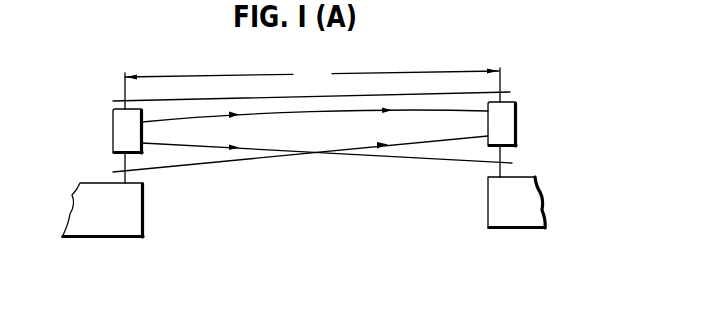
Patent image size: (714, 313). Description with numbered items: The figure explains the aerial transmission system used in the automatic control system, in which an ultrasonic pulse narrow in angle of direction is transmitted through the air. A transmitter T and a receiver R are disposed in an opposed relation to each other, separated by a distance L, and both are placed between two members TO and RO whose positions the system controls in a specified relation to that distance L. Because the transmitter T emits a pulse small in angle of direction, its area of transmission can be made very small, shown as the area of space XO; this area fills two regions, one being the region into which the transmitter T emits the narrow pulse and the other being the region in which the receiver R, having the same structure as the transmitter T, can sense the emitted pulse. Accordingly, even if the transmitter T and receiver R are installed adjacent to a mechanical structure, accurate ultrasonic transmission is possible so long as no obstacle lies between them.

The transmitter T is at (120, 137).
The receiver R is at (507, 124).
The member TO is at (113, 225).
The member RO is at (511, 217).
The area of space XO is at (308, 138).
The distance L is at (312, 77).